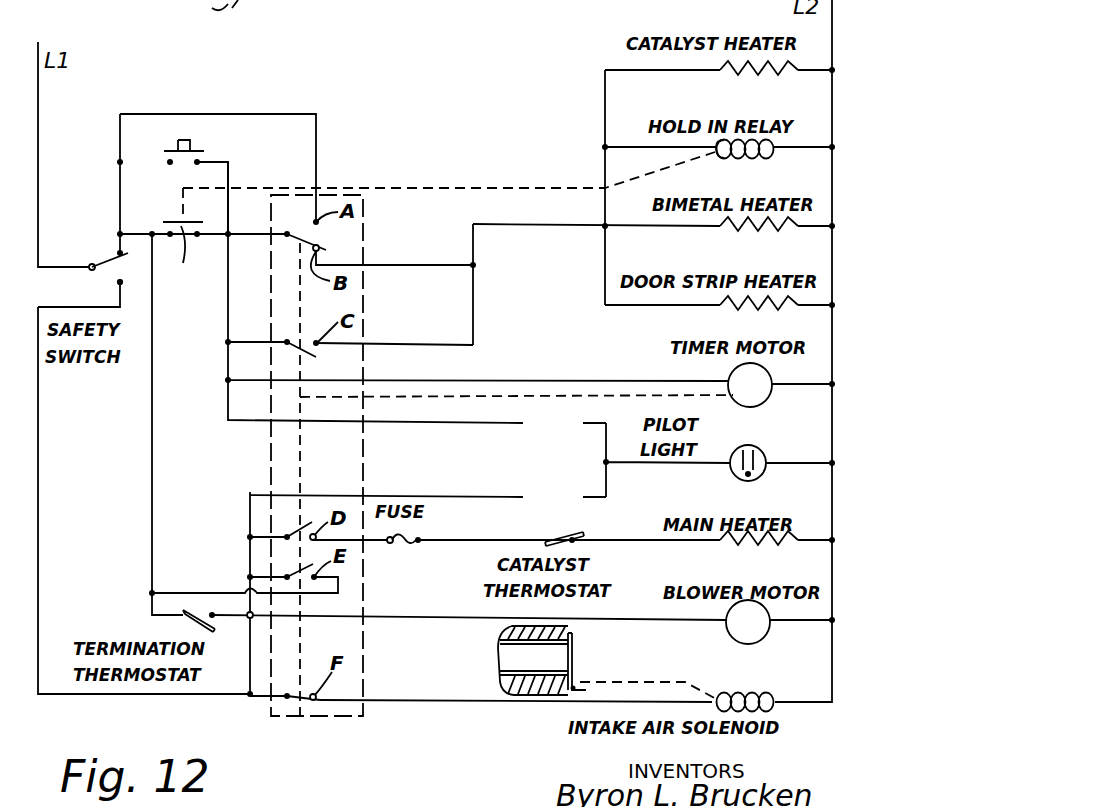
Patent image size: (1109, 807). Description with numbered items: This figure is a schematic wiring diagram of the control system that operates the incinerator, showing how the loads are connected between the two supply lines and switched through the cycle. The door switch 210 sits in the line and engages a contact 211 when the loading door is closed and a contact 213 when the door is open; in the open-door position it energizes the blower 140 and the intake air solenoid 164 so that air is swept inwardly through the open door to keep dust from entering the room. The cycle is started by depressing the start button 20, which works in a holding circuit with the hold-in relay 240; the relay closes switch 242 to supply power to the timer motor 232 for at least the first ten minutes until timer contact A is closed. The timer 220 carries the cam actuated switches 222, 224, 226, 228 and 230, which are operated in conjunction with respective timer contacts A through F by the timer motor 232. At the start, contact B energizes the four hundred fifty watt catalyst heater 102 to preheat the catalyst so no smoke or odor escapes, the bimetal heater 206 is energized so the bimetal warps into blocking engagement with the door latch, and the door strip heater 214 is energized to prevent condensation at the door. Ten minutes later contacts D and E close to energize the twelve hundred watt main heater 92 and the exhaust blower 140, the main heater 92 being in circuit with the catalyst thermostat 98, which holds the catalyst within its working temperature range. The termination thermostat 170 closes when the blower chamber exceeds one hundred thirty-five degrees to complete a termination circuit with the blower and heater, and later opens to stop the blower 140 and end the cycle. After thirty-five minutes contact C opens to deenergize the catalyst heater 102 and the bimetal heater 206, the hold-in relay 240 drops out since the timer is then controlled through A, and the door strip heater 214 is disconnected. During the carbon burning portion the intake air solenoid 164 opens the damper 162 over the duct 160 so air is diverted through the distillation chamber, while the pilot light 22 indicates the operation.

The start button 20 is at (190, 145).
The door switch 210 is at (101, 262).
The contact 211 is at (118, 252).
The contact 213 is at (118, 283).
The switch 242 is at (183, 259).
The timer 220 is at (348, 718).
The cam actuated switch 222 is at (300, 239).
The cam actuated switch 224 is at (312, 356).
The cam actuated switch 226 is at (307, 522).
The cam actuated switch 228 is at (290, 573).
The cam actuated switch 230 is at (310, 703).
The termination thermostat 170 is at (195, 628).
The catalyst thermostat 98 is at (566, 536).
The catalyst heater 102 is at (738, 72).
The hold-in relay 240 is at (750, 159).
The bimetal heater 206 is at (738, 233).
The door strip heater 214 is at (720, 309).
The timer motor 232 is at (732, 381).
The pilot light 22 is at (763, 456).
The main heater 92 is at (737, 546).
The blower 140 is at (734, 638).
The intake air solenoid 164 is at (754, 691).
The duct 160 is at (500, 668).
The damper 162 is at (576, 656).